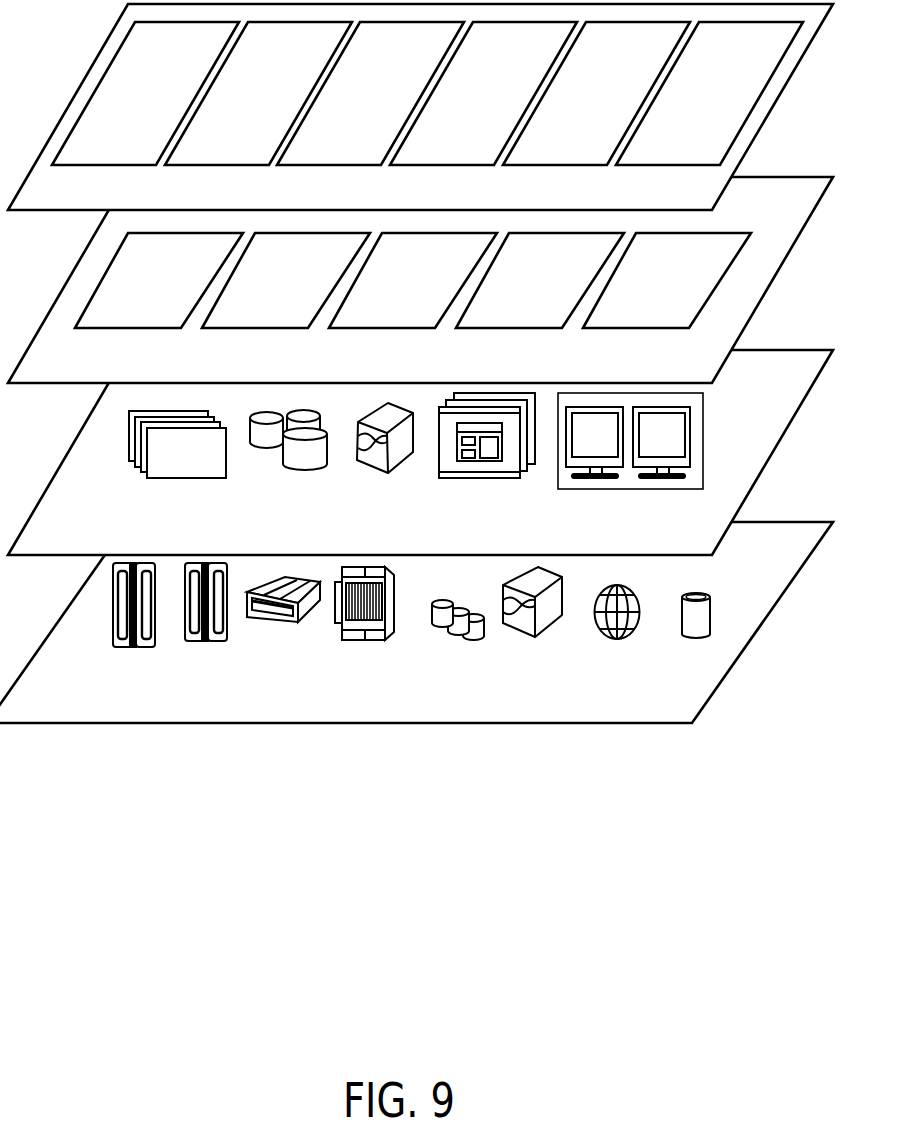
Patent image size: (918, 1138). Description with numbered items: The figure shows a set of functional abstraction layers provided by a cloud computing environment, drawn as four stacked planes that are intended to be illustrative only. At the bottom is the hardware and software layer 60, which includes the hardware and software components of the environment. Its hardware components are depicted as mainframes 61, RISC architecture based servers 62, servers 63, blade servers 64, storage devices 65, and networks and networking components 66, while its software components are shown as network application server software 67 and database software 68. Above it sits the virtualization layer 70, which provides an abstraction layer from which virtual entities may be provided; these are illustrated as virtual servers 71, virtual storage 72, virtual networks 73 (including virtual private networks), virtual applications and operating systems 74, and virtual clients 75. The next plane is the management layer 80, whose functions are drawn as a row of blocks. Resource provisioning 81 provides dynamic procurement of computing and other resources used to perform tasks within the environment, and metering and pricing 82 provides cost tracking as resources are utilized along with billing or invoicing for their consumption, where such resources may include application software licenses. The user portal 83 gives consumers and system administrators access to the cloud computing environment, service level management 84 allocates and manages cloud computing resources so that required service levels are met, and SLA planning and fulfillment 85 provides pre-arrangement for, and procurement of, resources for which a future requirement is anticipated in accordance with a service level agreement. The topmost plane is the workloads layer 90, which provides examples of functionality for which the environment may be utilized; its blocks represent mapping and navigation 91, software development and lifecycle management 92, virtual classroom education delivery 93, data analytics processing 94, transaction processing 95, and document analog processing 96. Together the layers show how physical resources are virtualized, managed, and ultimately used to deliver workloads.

The hardware and software layer 60 is at (48, 724).
The mainframes 61 is at (135, 647).
The RISC architecture based servers 62 is at (215, 641).
The servers 63 is at (285, 622).
The blade servers 64 is at (370, 640).
The storage devices 65 is at (455, 635).
The networks and networking components 66 is at (535, 637).
The network application server software 67 is at (617, 639).
The database software 68 is at (696, 638).
The virtualization layer 70 is at (48, 556).
The virtual servers 71 is at (188, 478).
The virtual storage 72 is at (310, 470).
The virtual networks 73 is at (388, 473).
The virtual applications and operating systems 74 is at (486, 478).
The virtual clients 75 is at (631, 489).
The management layer 80 is at (48, 384).
The resource provisioning 81 is at (138, 291).
The metering and pricing 82 is at (265, 291).
The user portal 83 is at (393, 291).
The service level management 84 is at (520, 291).
The SLA planning and fulfillment 85 is at (647, 291).
The workloads layer 90 is at (48, 211).
The mapping and navigation 91 is at (136, 100).
The software development and lifecycle management 92 is at (248, 100).
The virtual classroom education delivery 93 is at (355, 100).
The data analytics processing 94 is at (470, 100).
The transaction processing 95 is at (581, 100).
The document analog processing 96 is at (697, 100).